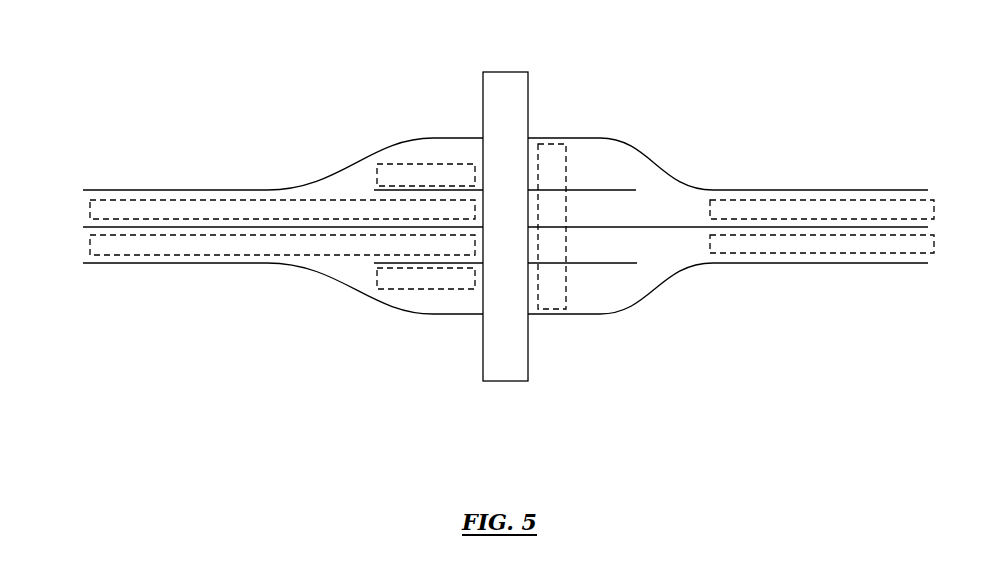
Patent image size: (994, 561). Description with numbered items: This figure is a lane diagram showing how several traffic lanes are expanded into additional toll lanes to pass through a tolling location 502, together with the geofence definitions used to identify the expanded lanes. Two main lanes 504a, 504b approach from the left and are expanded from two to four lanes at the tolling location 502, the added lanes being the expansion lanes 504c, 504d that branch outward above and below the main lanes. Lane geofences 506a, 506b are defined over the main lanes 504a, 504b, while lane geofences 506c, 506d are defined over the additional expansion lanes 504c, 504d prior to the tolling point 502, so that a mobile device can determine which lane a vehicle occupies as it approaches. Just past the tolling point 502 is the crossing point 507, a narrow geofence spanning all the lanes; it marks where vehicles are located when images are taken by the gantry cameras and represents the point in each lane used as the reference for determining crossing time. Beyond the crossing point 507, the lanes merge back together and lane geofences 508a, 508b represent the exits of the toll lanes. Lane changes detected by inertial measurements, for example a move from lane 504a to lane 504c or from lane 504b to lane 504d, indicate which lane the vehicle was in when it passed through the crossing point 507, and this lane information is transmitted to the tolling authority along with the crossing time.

The tolling location 502 is at (507, 72).
The main lane 504a is at (78, 209).
The main lane 504b is at (76, 243).
The expansion lane 504c is at (597, 162).
The expansion lane 504d is at (595, 292).
The lane geofence 506a is at (175, 198).
The lane geofence 506b is at (185, 255).
The lane geofence 506c is at (418, 162).
The lane geofence 506d is at (412, 290).
The crossing point 507 is at (565, 162).
The lane geofence 508a is at (802, 197).
The lane geofence 508b is at (815, 254).